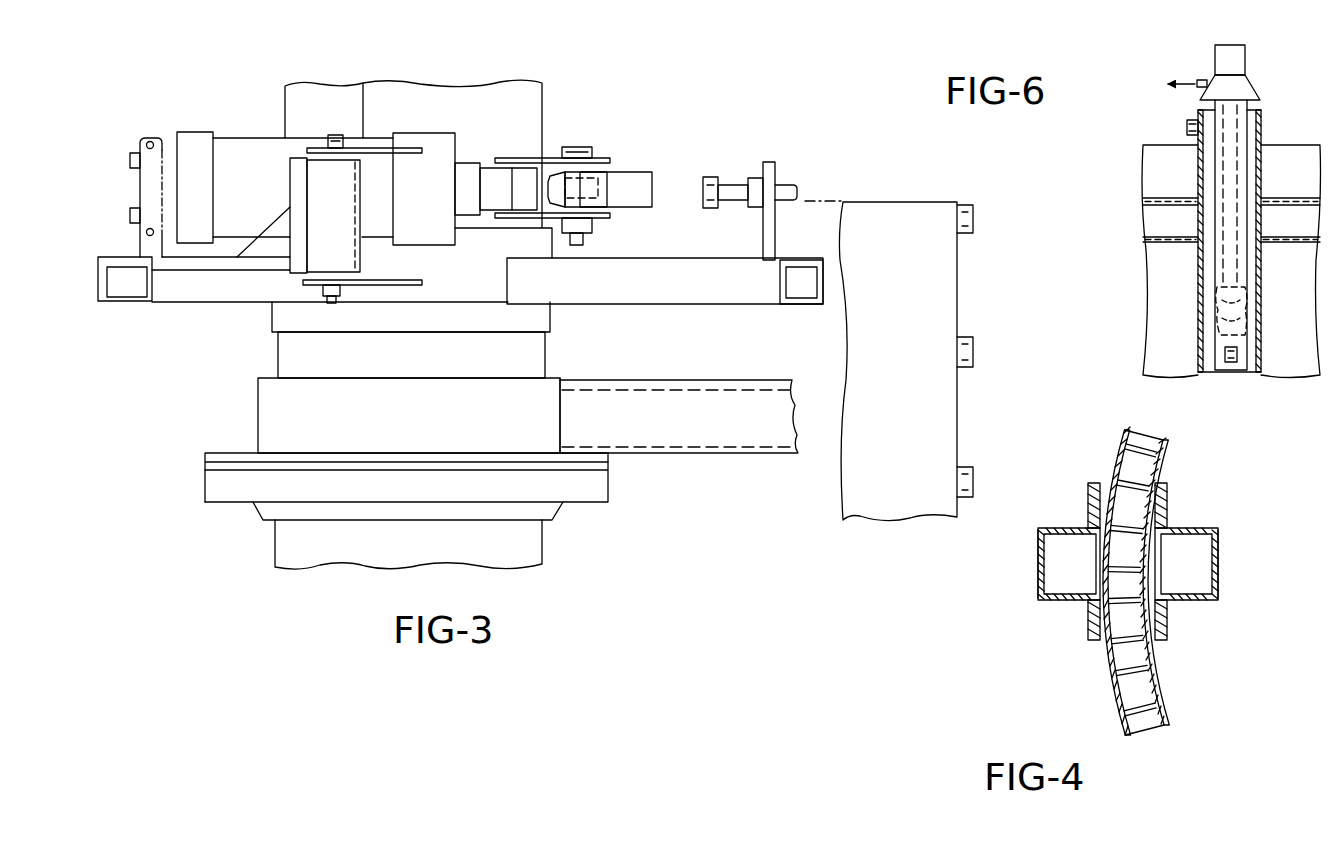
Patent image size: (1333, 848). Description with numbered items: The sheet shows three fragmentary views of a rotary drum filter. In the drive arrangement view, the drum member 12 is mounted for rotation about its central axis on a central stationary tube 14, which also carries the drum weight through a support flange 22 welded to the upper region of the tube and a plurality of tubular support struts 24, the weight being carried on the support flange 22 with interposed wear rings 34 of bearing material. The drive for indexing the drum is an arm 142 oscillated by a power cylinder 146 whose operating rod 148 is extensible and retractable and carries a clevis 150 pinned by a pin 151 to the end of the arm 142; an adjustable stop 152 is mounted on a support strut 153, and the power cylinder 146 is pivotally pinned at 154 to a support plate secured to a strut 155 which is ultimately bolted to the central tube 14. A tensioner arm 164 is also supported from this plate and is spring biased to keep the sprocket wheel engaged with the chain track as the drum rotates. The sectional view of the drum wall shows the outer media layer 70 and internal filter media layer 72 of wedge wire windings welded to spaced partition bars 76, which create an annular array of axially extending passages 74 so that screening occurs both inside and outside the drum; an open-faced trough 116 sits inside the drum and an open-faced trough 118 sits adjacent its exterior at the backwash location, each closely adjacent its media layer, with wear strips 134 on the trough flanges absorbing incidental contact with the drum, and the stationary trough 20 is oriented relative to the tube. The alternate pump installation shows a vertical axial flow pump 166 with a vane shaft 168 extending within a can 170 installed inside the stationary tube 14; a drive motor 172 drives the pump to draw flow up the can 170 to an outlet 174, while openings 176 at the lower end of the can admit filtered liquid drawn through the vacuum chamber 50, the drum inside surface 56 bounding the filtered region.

In FIG. 3, the drum member 12 is at (899, 293).
In FIG. 6, the drum member 12 is at (1313, 117).
In FIG. 4, the drum member 12 is at (1202, 678).
In FIG. 3, the central stationary tube 14 is at (447, 369).
In FIG. 6, the central stationary tube 14 is at (1196, 318).
In FIG. 4, the stationary trough 20 is at (1046, 523).
In FIG. 3, the support flange 22 is at (612, 501).
In FIG. 3, the tubular support struts 24 is at (700, 432).
In FIG. 3, the wear rings 34 is at (612, 461).
In FIG. 6, the vacuum chamber 50 is at (1210, 244).
In FIG. 3, the drum inside surface 56 is at (213, 293).
In FIG. 4, the outer media layer 70 is at (1120, 707).
In FIG. 4, the internal filter media layer 72 is at (1162, 655).
In FIG. 4, the axially extending passages 74 is at (1120, 548).
In FIG. 4, the partition bars 76 is at (1132, 665).
In FIG. 4, the open-faced trough 116 is at (1258, 553).
In FIG. 4, the open-faced trough 118 is at (1036, 580).
In FIG. 4, the wear strips 134 is at (1100, 487).
In FIG. 3, the arm 142 is at (688, 141).
In FIG. 3, the power cylinder 146 is at (247, 143).
In FIG. 3, the operating rod 148 is at (487, 170).
In FIG. 3, the clevis 150 is at (523, 158).
In FIG. 3, the pin 151 is at (573, 146).
In FIG. 3, the adjustable stop 152 is at (708, 176).
In FIG. 3, the support strut 153 is at (700, 294).
In FIG. 3, the pivot pin 154 is at (148, 138).
In FIG. 3, the strut 155 is at (97, 284).
In FIG. 3, the tensioner arm 164 is at (363, 63).
In FIG. 6, the vertical axial flow pump 166 is at (1310, 62).
In FIG. 6, the vane shaft 168 is at (1220, 156).
In FIG. 6, the can 170 is at (1220, 260).
In FIG. 6, the drive motor 172 is at (1215, 58).
In FIG. 6, the outlet 174 is at (1200, 80).
In FIG. 6, the openings 176 is at (1233, 362).